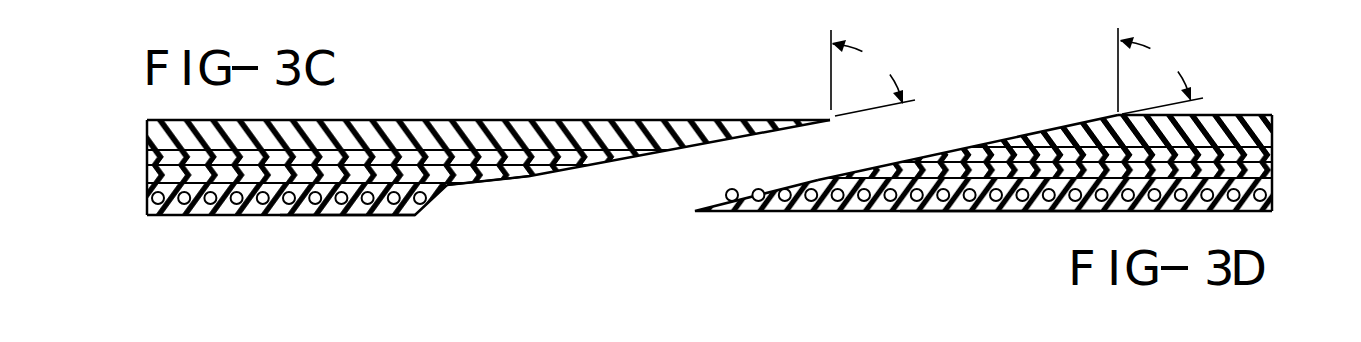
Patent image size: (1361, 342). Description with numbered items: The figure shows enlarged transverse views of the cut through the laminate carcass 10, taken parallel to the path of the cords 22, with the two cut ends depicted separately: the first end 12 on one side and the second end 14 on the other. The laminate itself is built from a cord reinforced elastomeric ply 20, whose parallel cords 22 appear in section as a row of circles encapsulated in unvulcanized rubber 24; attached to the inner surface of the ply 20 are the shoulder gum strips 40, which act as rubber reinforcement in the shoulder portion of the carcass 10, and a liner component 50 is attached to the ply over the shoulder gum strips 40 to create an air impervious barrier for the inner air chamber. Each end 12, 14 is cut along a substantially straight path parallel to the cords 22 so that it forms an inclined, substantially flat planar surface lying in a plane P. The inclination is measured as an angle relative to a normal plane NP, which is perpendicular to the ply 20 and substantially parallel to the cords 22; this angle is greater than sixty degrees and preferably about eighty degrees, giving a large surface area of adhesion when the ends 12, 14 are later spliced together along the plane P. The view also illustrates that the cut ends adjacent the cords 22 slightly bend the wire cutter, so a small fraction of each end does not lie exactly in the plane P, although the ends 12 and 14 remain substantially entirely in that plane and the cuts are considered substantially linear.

In FIG. 3C, the carcass 10 is at (461, 166).
In FIG. 3D, the first end 12 is at (1013, 170).
In FIG. 3C, the second end 14 is at (566, 174).
In FIG. 3C, the ply 20 is at (306, 241).
In FIG. 3D, the ply 20 is at (983, 238).
In FIG. 3C, the cords 22 is at (261, 204).
In FIG. 3D, the cords 22 is at (783, 202).
In FIG. 3C, the unvulcanized rubber 24 is at (315, 216).
In FIG. 3D, the unvulcanized rubber 24 is at (957, 213).
In FIG. 3C, the shoulder gum strips 40 is at (157, 158).
In FIG. 3D, the shoulder gum strips 40 is at (1273, 156).
In FIG. 3C, the liner component 50 is at (598, 124).
In FIG. 3D, the liner component 50 is at (1248, 115).
In FIG. 3C, the plane P is at (510, 180).
In FIG. 3D, the plane P is at (1020, 132).
In FIG. 3C, the normal plane NP is at (867, 59).
In FIG. 3D, the normal plane NP is at (1154, 58).